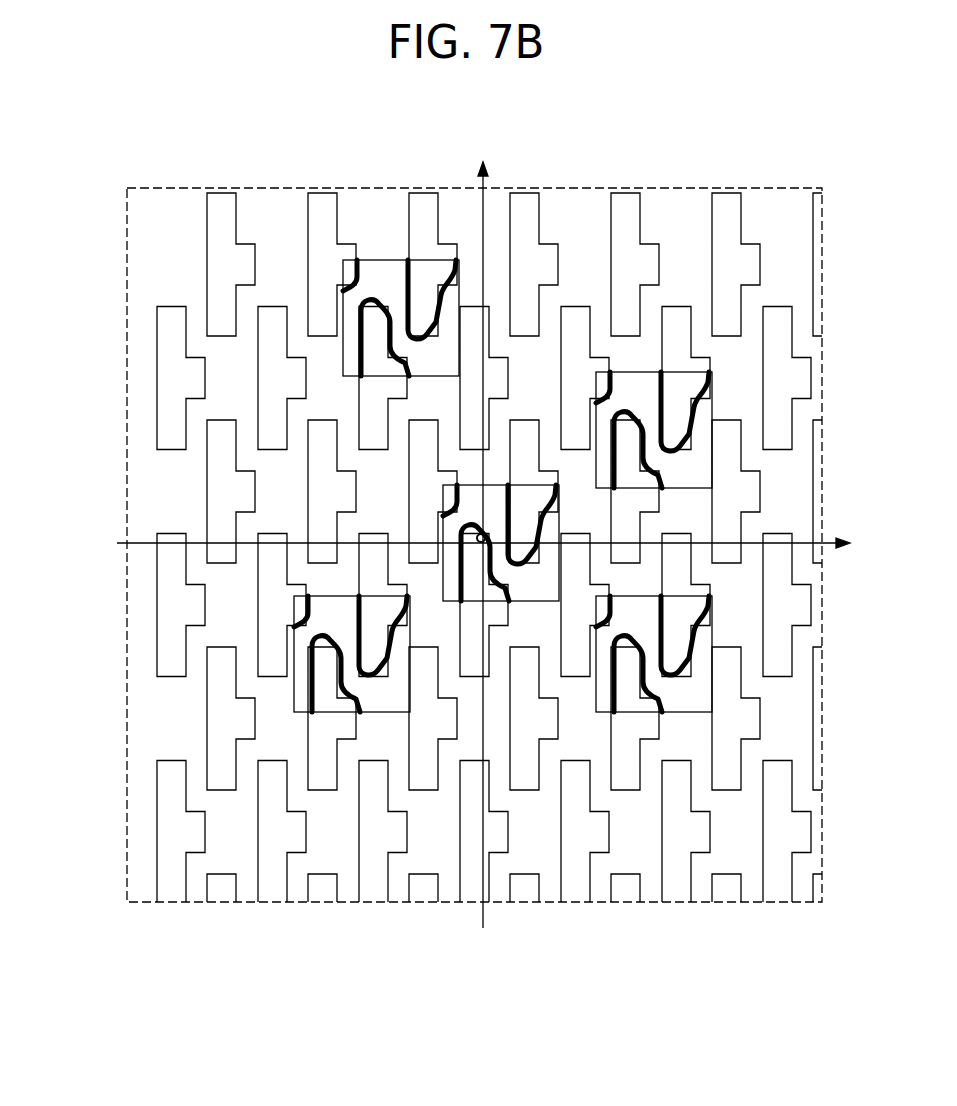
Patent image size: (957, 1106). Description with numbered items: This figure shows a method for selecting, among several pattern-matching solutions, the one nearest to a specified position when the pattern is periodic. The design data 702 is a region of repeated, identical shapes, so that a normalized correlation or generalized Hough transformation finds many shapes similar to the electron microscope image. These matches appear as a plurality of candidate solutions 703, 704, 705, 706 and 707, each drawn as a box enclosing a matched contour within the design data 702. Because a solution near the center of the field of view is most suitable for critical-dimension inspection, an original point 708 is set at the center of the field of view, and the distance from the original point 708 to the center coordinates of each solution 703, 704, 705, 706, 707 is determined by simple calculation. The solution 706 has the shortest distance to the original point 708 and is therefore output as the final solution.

The design data 702 is at (158, 188).
The solution 703 is at (422, 260).
The solution 704 is at (645, 372).
The solution 705 is at (358, 712).
The solution 706 is at (512, 601).
The fourth inspection box with simulated pattern contour 707 is at (658, 712).
The original point 708 is at (479, 541).